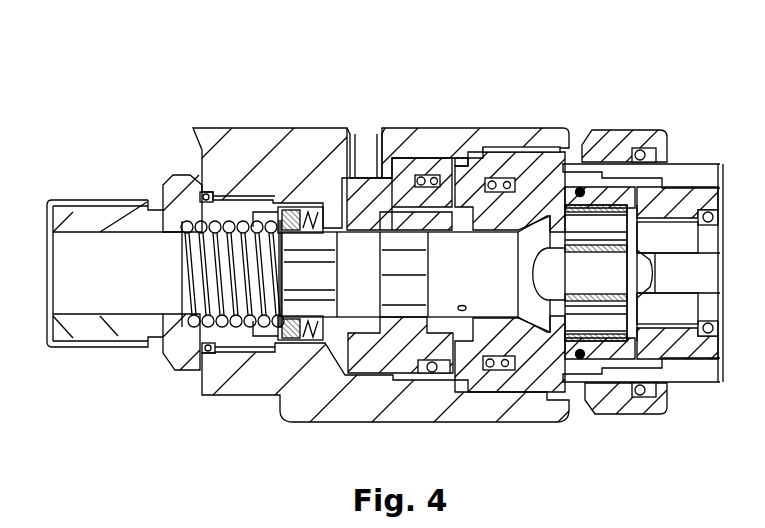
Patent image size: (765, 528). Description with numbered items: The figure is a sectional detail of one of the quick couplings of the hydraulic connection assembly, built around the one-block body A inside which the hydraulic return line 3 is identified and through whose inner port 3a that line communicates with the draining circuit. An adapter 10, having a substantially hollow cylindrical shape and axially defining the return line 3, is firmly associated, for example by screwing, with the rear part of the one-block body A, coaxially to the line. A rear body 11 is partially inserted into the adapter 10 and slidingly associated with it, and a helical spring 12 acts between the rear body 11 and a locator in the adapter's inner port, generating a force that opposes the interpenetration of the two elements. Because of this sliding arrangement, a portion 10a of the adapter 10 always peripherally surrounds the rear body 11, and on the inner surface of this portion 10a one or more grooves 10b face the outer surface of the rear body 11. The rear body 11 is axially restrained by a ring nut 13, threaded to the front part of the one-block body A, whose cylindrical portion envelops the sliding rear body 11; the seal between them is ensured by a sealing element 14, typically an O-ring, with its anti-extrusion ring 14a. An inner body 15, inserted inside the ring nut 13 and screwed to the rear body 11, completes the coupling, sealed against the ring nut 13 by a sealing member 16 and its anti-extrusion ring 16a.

The return line 3 is at (80, 268).
The inner port 3a is at (367, 140).
The adapter 10 is at (183, 190).
The portion of the adapter 10a is at (318, 210).
The grooves 10b is at (296, 225).
The rear body 11 is at (413, 187).
The helical spring 12 is at (163, 352).
The ring nut 13 is at (608, 140).
The sealing element 14 is at (458, 375).
The anti-extrusion ring 14a is at (428, 374).
The inner body 15 is at (535, 217).
The sealing member 16 is at (497, 197).
The anti-extrusion ring 16a is at (515, 180).
The one-block body A is at (240, 147).